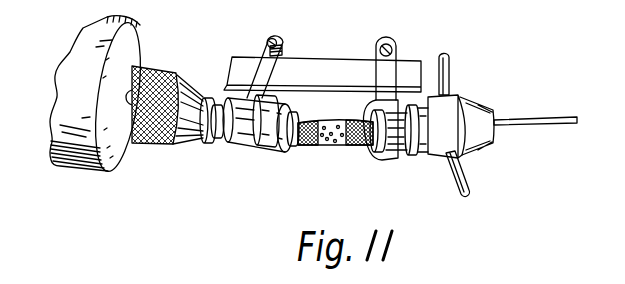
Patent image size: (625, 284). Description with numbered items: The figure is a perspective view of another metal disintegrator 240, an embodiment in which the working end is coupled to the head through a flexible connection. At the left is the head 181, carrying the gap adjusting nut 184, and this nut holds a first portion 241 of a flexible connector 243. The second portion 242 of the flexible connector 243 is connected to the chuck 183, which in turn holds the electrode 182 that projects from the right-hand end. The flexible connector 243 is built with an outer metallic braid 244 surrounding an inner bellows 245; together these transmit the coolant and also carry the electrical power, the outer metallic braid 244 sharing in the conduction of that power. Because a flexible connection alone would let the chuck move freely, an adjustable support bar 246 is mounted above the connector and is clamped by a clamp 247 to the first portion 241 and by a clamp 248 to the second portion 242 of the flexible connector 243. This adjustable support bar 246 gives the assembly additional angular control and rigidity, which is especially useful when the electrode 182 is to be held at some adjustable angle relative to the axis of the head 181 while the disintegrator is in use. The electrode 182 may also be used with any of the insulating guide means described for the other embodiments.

The head 181 is at (147, 42).
The electrode 182 is at (555, 126).
The chuck 183 is at (483, 150).
The gap adjusting nut 184 is at (157, 135).
The metal disintegrator 240 is at (452, 118).
The first portion 241 is at (242, 134).
The second portion 242 is at (424, 166).
The flexible connector 243 is at (372, 156).
The outer metallic braid 244 is at (318, 146).
The inner bellows 245 is at (328, 146).
The adjustable support bar 246 is at (344, 82).
The clamp 247 is at (267, 42).
The clamp 248 is at (375, 45).